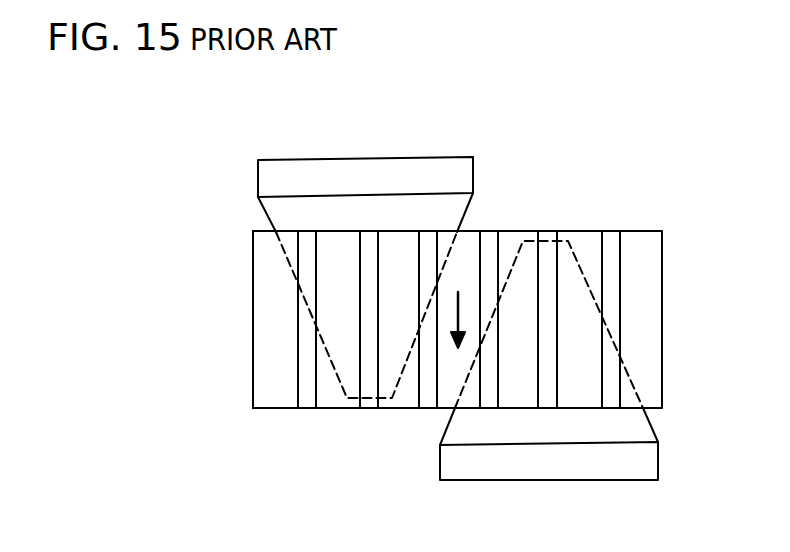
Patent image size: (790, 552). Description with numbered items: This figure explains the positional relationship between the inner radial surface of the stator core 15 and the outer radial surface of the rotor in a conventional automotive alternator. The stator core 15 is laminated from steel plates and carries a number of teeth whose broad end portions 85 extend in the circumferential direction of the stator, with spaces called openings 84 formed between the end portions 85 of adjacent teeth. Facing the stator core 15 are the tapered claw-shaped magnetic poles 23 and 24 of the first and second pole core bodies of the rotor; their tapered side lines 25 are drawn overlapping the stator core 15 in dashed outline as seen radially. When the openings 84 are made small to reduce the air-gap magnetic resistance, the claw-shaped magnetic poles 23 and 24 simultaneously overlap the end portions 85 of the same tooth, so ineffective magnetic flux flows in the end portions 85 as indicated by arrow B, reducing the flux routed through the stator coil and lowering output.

The stator core 15 is at (668, 237).
The claw-shaped magnetic pole 23 is at (357, 172).
The claw-shaped magnetic pole 24 is at (585, 463).
The tapered side surfaces of bonding tool 25 is at (275, 213).
The opening 84 is at (307, 402).
The end portion 85 is at (270, 403).
The arrow B is at (460, 300).